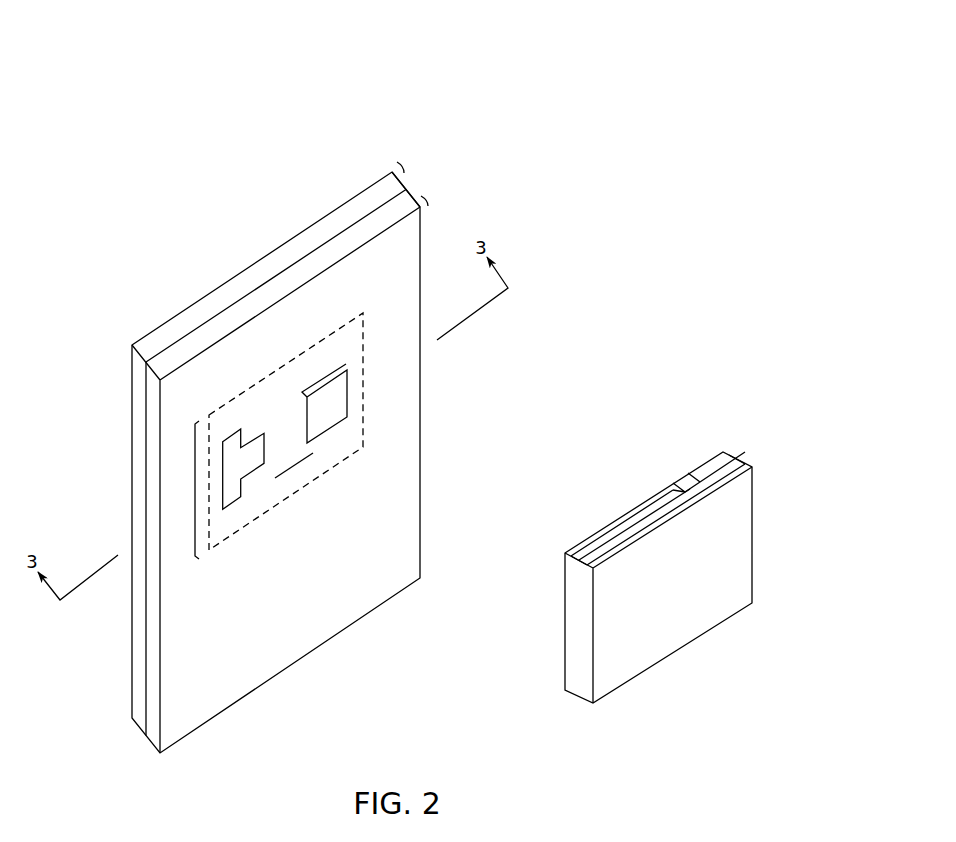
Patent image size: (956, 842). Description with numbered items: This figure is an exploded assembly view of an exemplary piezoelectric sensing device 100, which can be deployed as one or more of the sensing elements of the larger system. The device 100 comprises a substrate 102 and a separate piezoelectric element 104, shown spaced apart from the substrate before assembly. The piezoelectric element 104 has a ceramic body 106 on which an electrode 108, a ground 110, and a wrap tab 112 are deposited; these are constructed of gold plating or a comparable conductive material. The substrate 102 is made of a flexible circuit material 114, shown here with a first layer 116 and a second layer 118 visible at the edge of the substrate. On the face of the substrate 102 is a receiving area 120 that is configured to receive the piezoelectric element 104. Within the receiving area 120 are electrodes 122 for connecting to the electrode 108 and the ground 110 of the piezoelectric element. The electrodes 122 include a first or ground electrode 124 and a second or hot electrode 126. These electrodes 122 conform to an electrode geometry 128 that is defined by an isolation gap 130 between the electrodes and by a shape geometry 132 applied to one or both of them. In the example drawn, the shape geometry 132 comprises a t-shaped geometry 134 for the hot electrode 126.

The piezoelectric sensing device 100 is at (551, 46).
The substrate 102 is at (353, 650).
The piezoelectric element 104 is at (562, 650).
The ceramic body 106 is at (588, 558).
The electrode 108 is at (616, 513).
The ground 110 is at (758, 523).
The wrap tab 112 is at (615, 557).
The flexible circuit material 114 is at (422, 185).
The first layer 116 is at (398, 168).
The second layer 118 is at (423, 200).
The receiving area 120 is at (262, 517).
The electrodes 122 is at (260, 428).
The ground electrode 124 is at (335, 400).
The hot electrode 126 is at (227, 470).
The electrode geometry 128 is at (193, 458).
The isolation gap 130 is at (297, 468).
The shape geometry 132 is at (235, 423).
The t-shaped geometry 134 is at (231, 508).